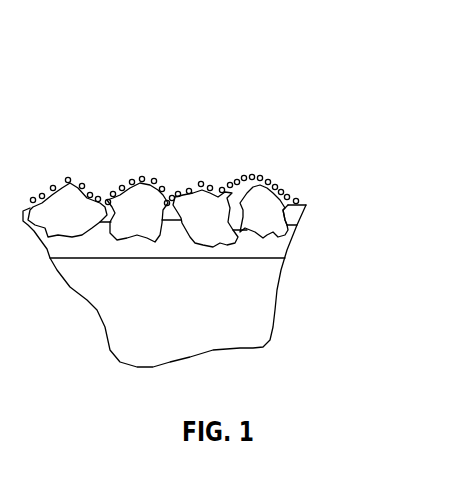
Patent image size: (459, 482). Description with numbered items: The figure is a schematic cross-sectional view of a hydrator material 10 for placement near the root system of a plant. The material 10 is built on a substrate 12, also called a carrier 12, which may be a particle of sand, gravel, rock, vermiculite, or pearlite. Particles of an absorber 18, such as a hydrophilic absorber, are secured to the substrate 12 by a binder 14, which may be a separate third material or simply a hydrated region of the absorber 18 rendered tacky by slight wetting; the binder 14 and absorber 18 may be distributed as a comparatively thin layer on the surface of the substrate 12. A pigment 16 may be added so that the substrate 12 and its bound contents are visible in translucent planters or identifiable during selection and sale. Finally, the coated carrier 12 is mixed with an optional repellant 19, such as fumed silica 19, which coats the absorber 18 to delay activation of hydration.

The material 10 is at (235, 117).
The substrate 12 is at (252, 338).
The binder 14 is at (277, 245).
The pigment 16 is at (306, 206).
The absorber 18 is at (258, 174).
The repellant 19 is at (147, 182).